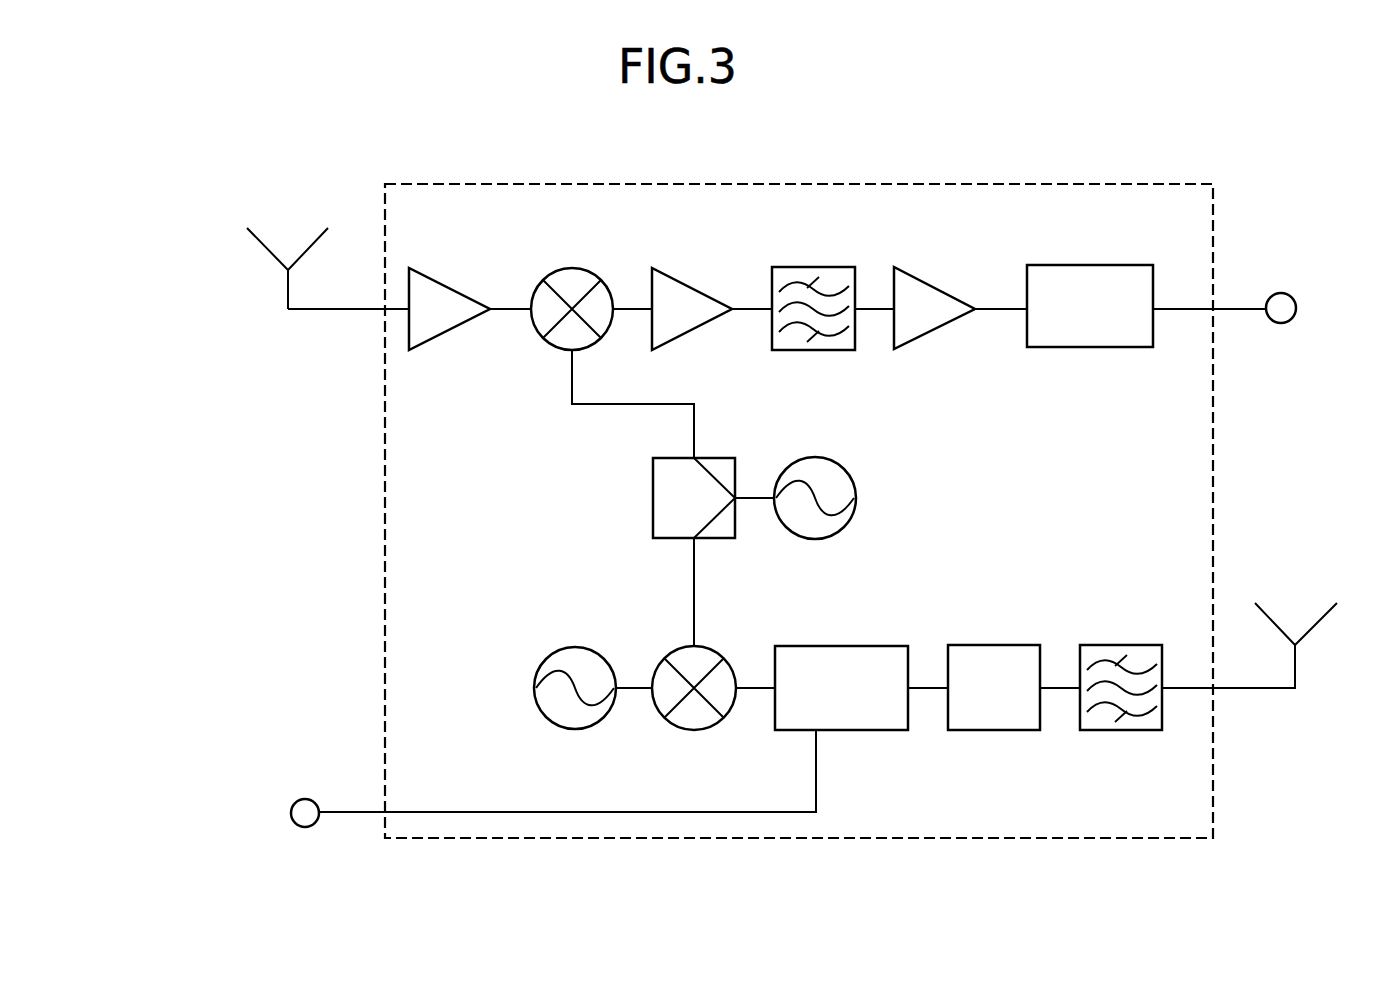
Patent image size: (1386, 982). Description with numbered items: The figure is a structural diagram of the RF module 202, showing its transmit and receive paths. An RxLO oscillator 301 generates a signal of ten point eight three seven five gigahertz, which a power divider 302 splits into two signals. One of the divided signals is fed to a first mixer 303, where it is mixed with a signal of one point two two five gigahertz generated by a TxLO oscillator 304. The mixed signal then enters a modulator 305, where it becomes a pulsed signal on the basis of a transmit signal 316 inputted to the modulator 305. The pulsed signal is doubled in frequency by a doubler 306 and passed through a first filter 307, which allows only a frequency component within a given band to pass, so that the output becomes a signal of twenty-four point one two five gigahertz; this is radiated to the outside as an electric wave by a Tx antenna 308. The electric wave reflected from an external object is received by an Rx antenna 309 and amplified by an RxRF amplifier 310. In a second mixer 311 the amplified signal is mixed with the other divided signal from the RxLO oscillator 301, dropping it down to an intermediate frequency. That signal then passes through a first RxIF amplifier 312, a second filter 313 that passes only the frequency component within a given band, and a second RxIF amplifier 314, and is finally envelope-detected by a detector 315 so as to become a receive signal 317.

The RF module 202 is at (772, 177).
The RxLO oscillator 301 is at (857, 498).
The power divider 302 is at (653, 475).
The mixer 1 303 is at (680, 648).
The TxLO oscillator 304 is at (569, 647).
The modulator 305 is at (801, 646).
The doubler 306 is at (998, 645).
The filter 1 307 is at (1118, 645).
The Tx antenna 308 is at (1292, 551).
The Rx antenna 309 is at (285, 176).
The RxRF amplifier 310 is at (447, 285).
The mixer 2 311 is at (568, 241).
The RxIF amplifier 1 312 is at (690, 284).
The filter 2 313 is at (810, 267).
The RxIF amplifier 2 314 is at (932, 282).
The detector 315 is at (1108, 265).
The transmit signal 316 is at (302, 799).
The receive signal 317 is at (1278, 293).